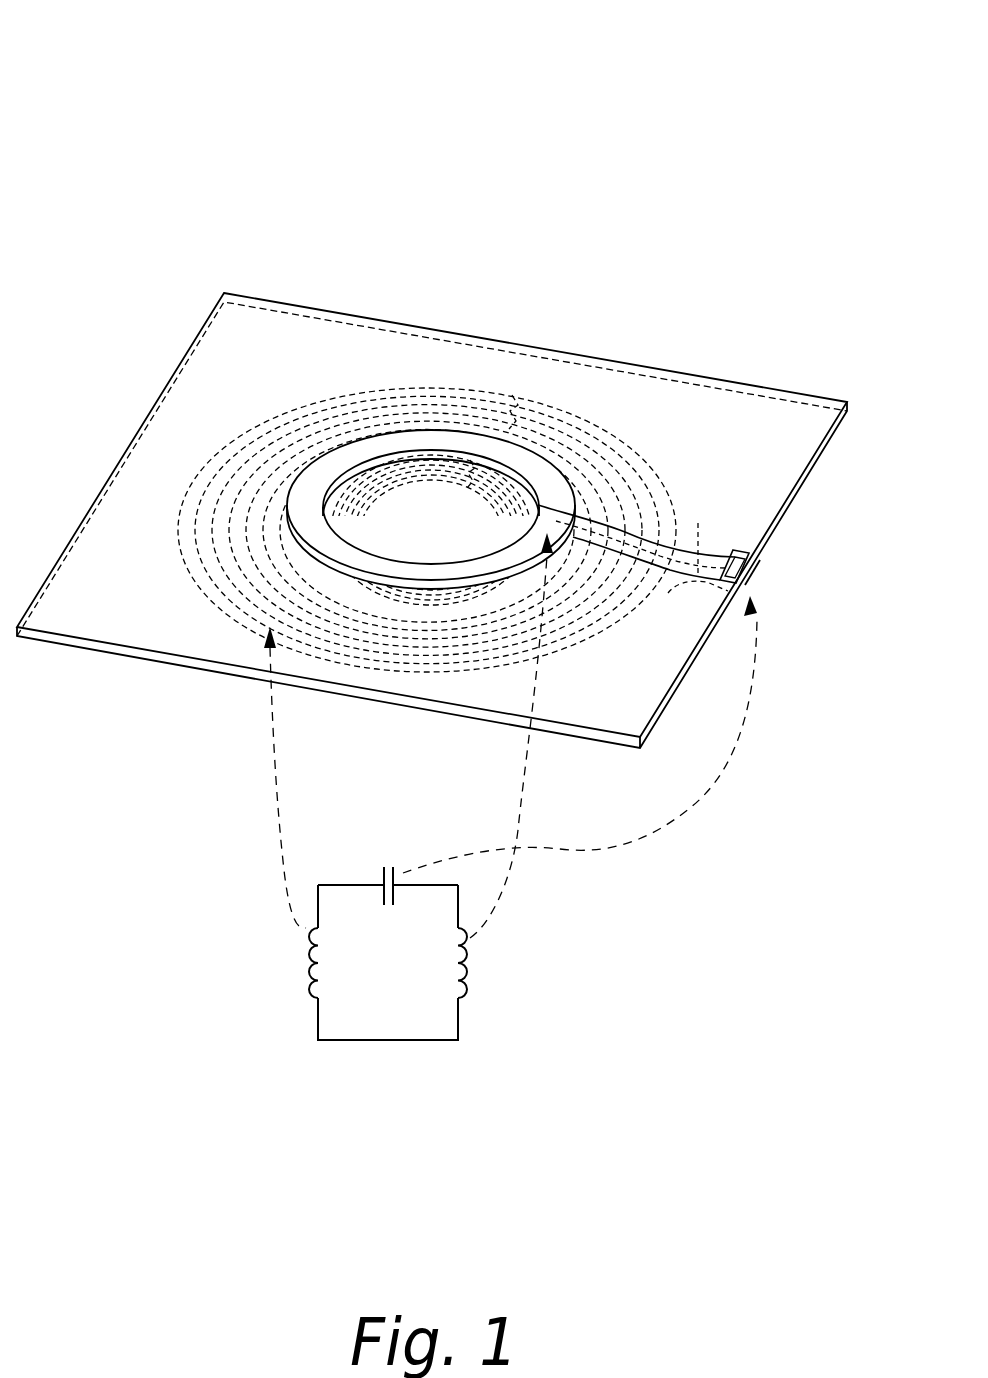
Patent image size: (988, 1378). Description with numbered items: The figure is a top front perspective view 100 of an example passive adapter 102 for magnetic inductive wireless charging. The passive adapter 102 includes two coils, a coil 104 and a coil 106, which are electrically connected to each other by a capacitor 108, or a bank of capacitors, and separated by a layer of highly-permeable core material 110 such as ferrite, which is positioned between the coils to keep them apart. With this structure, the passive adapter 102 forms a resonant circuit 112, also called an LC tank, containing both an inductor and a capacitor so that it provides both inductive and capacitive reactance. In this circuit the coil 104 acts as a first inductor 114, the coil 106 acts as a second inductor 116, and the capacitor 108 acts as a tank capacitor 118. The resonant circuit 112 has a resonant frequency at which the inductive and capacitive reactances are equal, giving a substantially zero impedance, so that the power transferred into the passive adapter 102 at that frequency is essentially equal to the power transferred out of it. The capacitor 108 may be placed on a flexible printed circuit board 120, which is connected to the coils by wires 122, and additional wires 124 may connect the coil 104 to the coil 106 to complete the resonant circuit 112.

The top front perspective view 100 is at (106, 40).
The passive adapter 102 is at (96, 421).
The coil 104 is at (182, 535).
The coil 106 is at (327, 472).
The capacitor 108 is at (742, 575).
The core material 110 is at (345, 315).
The resonant circuit 112 is at (236, 871).
The inductor L1 114 is at (310, 995).
The inductor L2 116 is at (468, 995).
The capacitor C1 118 is at (383, 869).
The flexible printed circuit board 120 is at (757, 546).
The wires 122 is at (686, 570).
The wires 124 is at (686, 570).